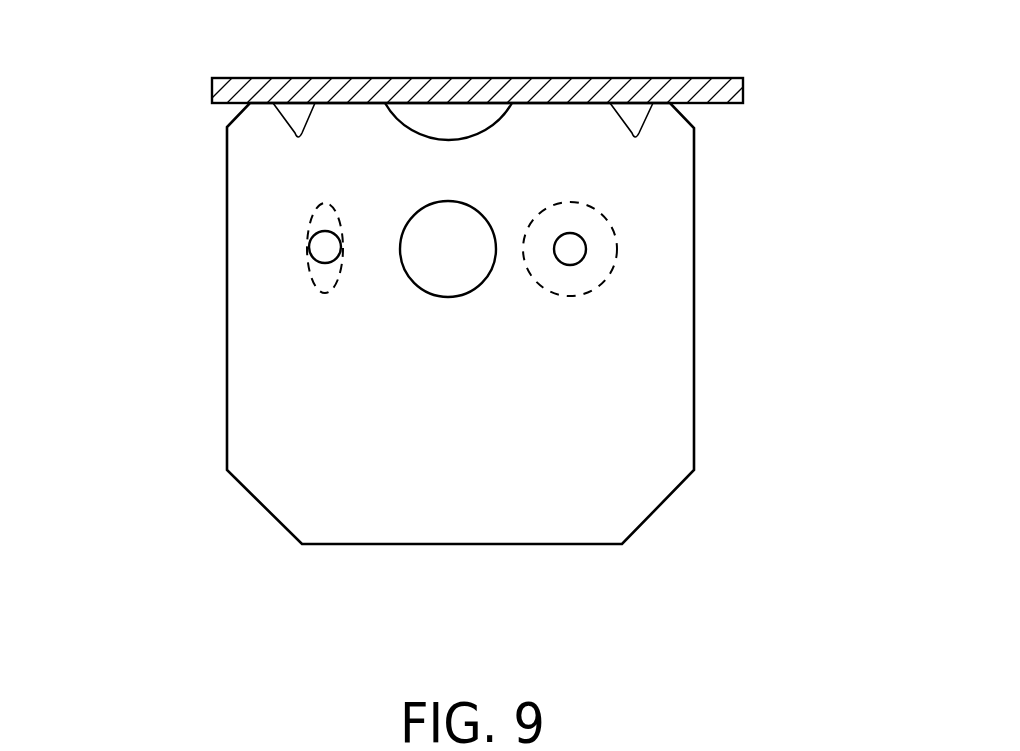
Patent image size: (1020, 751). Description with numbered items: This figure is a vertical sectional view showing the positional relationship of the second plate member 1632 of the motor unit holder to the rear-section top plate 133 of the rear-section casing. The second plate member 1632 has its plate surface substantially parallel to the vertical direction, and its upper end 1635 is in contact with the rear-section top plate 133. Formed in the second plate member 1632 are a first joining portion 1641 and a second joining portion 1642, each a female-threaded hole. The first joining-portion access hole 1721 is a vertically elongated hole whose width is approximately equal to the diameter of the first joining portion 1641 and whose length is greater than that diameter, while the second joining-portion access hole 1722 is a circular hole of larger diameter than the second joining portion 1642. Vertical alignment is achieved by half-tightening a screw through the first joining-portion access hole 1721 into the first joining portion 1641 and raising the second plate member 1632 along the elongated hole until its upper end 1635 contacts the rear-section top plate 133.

The rear-section top plate 133 is at (473, 78).
The upper end 1635 is at (300, 138).
The first joining portion 1641 is at (323, 252).
The second joining portion 1642 is at (572, 250).
The first joining-portion access hole 1721 is at (307, 272).
The second joining-portion access hole 1722 is at (608, 270).
The second plate member 1632 is at (670, 403).